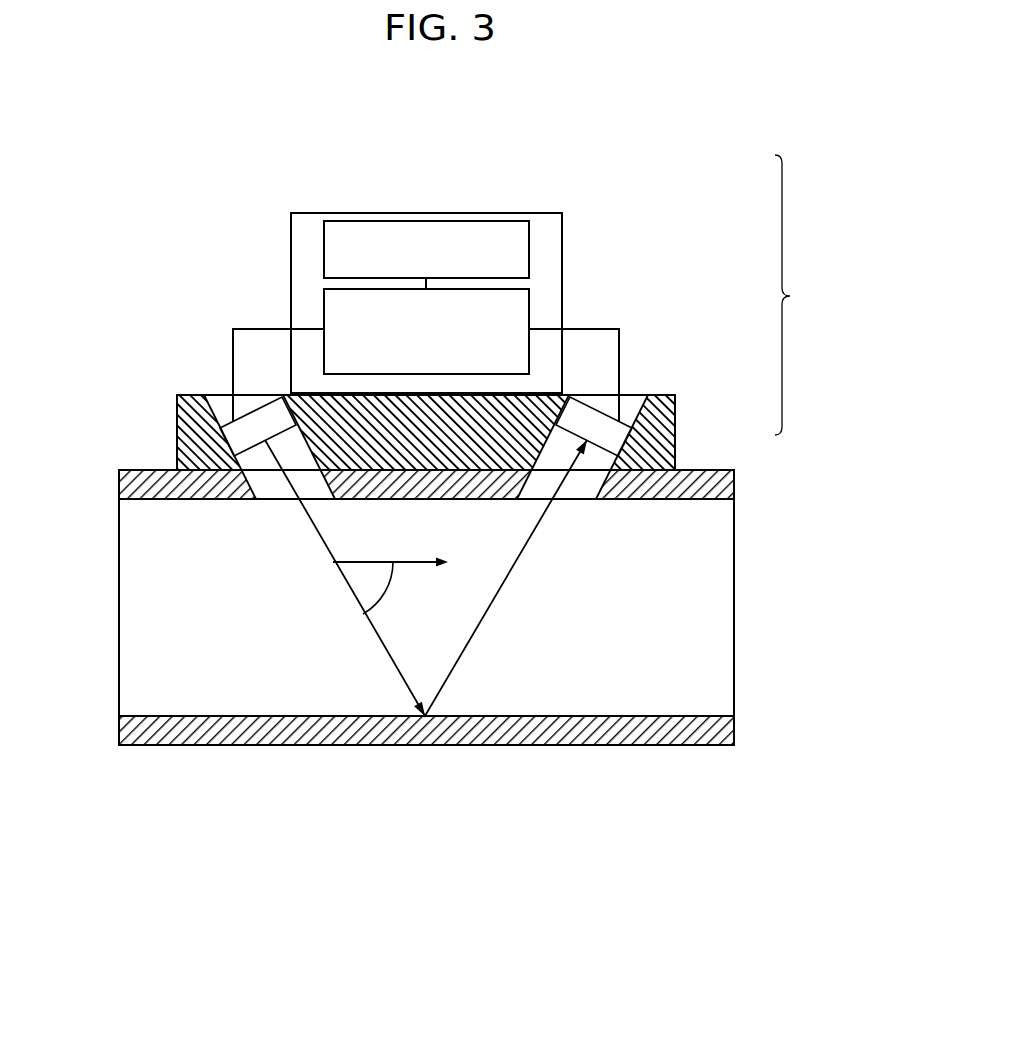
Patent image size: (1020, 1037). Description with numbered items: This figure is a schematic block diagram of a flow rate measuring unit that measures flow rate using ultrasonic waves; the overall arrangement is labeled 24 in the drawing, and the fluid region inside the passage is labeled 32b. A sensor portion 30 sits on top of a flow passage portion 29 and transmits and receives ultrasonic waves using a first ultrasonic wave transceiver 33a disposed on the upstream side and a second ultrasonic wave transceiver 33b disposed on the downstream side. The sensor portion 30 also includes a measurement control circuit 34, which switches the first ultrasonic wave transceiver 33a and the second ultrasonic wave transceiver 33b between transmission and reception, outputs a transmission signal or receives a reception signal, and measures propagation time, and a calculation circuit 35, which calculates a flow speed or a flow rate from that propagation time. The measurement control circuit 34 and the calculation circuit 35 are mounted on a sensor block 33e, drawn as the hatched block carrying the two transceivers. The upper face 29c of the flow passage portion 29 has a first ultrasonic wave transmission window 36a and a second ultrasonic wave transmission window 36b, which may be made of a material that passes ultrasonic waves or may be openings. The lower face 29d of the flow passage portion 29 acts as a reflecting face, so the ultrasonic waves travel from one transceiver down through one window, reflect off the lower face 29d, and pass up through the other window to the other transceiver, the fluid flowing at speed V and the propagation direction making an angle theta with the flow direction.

The ultrasonic flowmeter 24 is at (543, 173).
The calculation circuit 35 is at (528, 248).
The measurement control circuit 34 is at (529, 318).
The sensor portion 30 is at (504, 312).
The first ultrasonic wave transceiver 33a is at (248, 433).
The second ultrasonic wave transceiver 33b is at (580, 413).
The sensor block 33e is at (655, 435).
The first ultrasonic wave transmission window 36a is at (267, 500).
The second ultrasonic wave transmission window 36b is at (583, 485).
The flow passage portion 29 is at (455, 747).
The upper face 29c is at (690, 499).
The lower face 29d is at (470, 714).
The fluid flow passage 32b is at (304, 690).